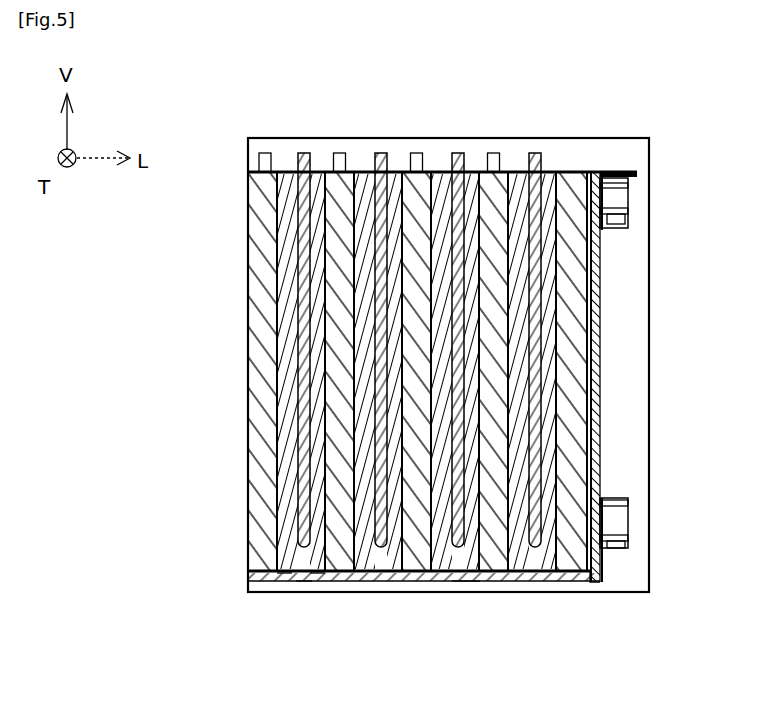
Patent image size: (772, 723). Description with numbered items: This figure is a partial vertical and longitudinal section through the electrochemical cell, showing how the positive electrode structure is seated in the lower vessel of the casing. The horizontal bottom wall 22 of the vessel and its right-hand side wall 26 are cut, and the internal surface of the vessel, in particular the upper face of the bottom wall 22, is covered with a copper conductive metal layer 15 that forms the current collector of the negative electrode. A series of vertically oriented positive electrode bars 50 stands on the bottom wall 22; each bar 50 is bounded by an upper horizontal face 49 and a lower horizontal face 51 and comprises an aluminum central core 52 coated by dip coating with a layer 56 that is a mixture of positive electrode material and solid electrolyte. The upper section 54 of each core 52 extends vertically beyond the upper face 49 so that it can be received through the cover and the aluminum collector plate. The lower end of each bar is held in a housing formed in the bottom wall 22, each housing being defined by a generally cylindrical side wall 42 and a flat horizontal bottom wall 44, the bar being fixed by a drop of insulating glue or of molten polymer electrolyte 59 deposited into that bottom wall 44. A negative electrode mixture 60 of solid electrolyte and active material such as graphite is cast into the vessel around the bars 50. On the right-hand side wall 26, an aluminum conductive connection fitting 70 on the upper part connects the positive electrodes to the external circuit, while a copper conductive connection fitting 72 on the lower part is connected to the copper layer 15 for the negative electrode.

The conductive metal layer 15 is at (258, 574).
The bottom wall 22 is at (441, 593).
The right-hand side wall 26 is at (600, 345).
The cylindrical side wall 42 is at (314, 578).
The flat horizontal bottom wall 44 is at (284, 578).
The upper horizontal face 49 is at (286, 166).
The positive electrode bar 50 is at (325, 290).
The lower horizontal face 51 is at (300, 578).
The central core 52 is at (300, 348).
The upper section 54 is at (302, 152).
The layer 56 is at (270, 522).
The molten polymer electrolyte 59 is at (465, 580).
The negative electrode mixture 60 is at (248, 228).
The aluminum conductive connection fitting 70 is at (640, 198).
The copper conductive connection fitting 72 is at (618, 520).